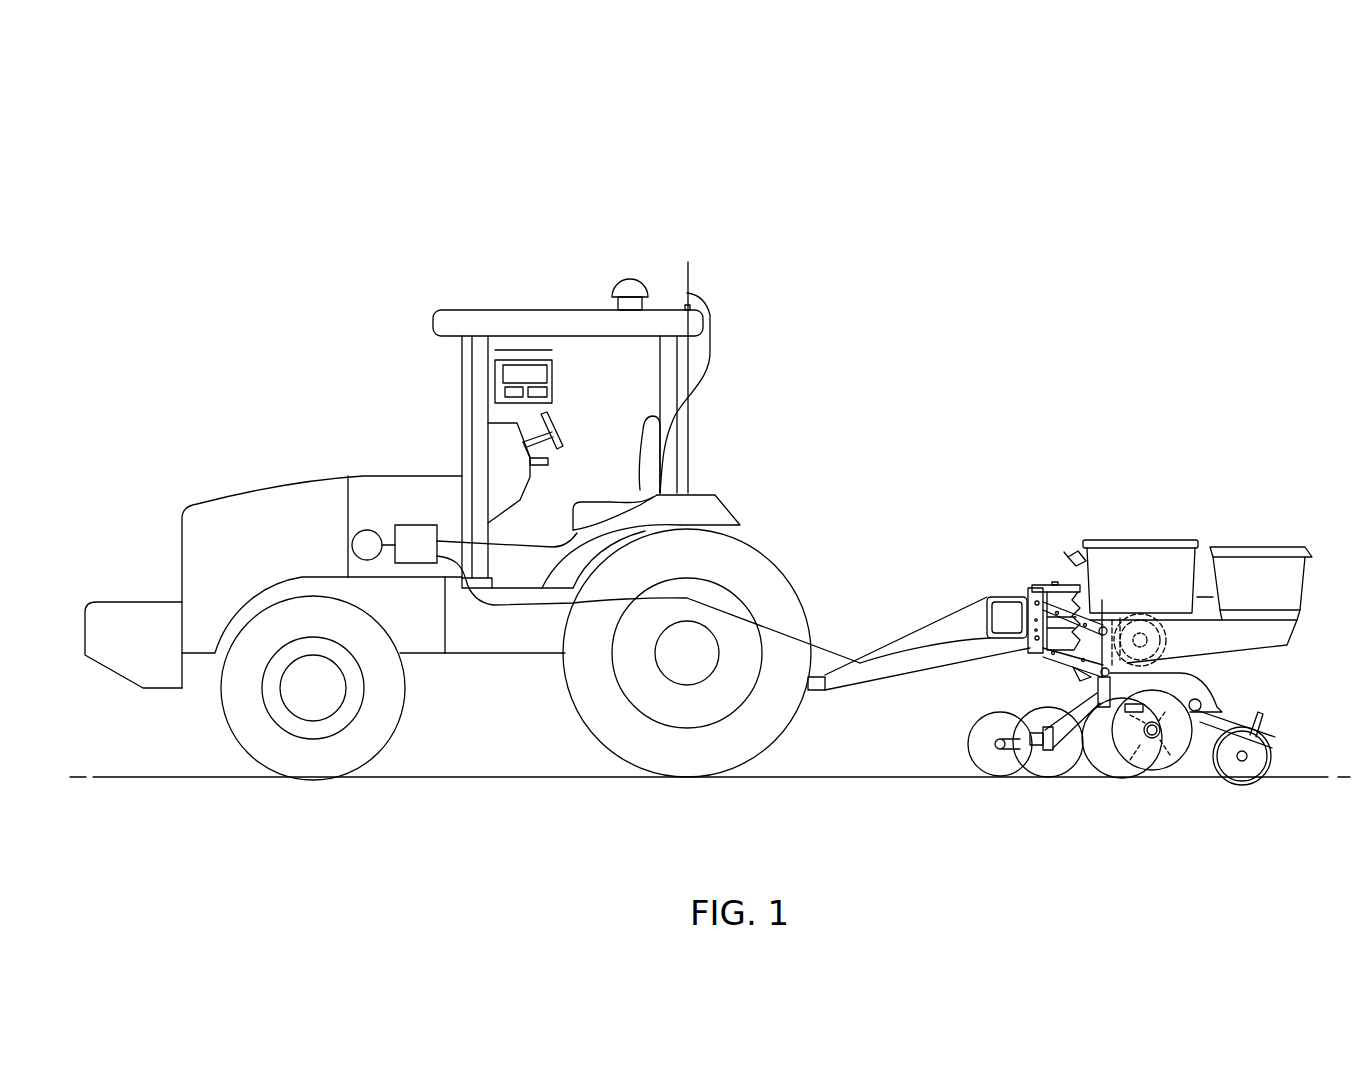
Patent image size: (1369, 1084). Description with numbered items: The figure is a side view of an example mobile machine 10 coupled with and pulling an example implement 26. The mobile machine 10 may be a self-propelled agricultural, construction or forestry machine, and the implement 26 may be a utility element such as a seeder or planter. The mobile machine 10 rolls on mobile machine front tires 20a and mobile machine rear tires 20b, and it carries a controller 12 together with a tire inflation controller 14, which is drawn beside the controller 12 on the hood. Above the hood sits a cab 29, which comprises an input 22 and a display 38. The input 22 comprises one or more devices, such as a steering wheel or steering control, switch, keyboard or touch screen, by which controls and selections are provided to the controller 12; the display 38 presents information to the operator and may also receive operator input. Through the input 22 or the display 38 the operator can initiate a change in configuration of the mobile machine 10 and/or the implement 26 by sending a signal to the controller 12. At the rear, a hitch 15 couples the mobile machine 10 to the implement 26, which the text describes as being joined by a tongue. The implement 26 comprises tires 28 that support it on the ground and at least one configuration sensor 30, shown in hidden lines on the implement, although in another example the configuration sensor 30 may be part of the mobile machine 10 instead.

The mobile machine 10 is at (715, 157).
The controller 12 is at (415, 563).
The tire inflation controller 14 is at (366, 542).
The hitch 15 is at (943, 637).
The mobile machine front tires 20a is at (305, 753).
The mobile machine rear tires 20b is at (680, 745).
The input 22 is at (549, 466).
The implement 26 is at (1168, 500).
The tires 28 is at (1132, 778).
The cab 29 is at (513, 350).
The configuration sensor 30 is at (1170, 635).
The display 38 is at (553, 367).